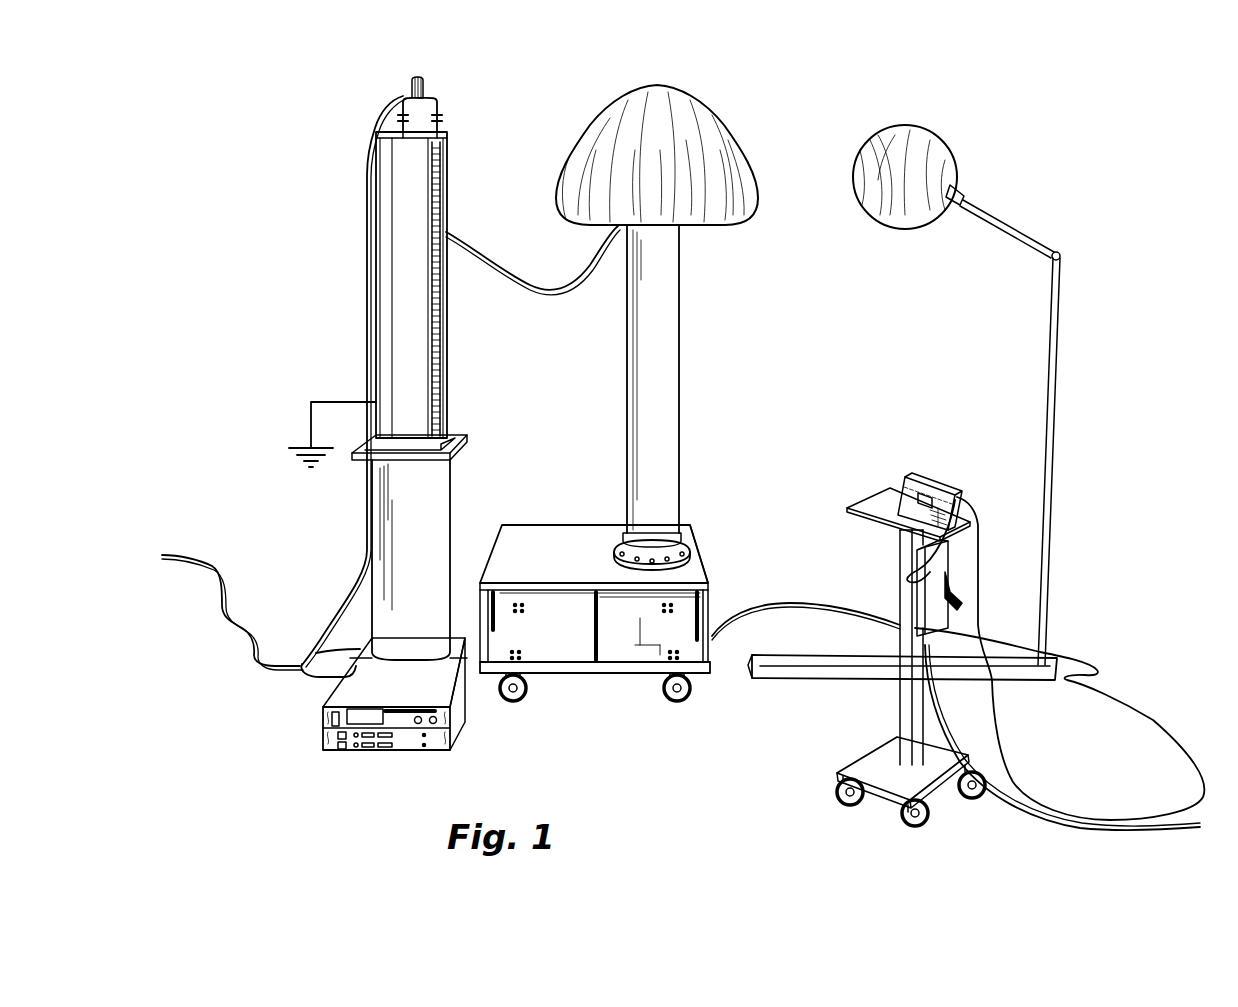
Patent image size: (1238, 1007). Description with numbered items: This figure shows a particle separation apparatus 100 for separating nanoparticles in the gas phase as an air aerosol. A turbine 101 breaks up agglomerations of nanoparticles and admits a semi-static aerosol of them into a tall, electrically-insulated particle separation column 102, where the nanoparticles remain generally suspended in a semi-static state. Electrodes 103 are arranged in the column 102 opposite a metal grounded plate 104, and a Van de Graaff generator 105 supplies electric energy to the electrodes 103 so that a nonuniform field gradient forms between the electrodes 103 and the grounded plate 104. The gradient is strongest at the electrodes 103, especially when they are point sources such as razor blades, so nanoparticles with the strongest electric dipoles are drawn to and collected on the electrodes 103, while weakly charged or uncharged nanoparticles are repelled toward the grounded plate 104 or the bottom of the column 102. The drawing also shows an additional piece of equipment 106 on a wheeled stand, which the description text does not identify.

The particle separation apparatus 100 is at (1024, 141).
The turbine 101 is at (437, 100).
The particle separation column 102 is at (408, 165).
The electrodes 103 is at (430, 202).
The grounded plate 104 is at (380, 342).
The Van de Graaff generator 105 is at (700, 97).
The portable instrument stand with power box 106 is at (940, 580).